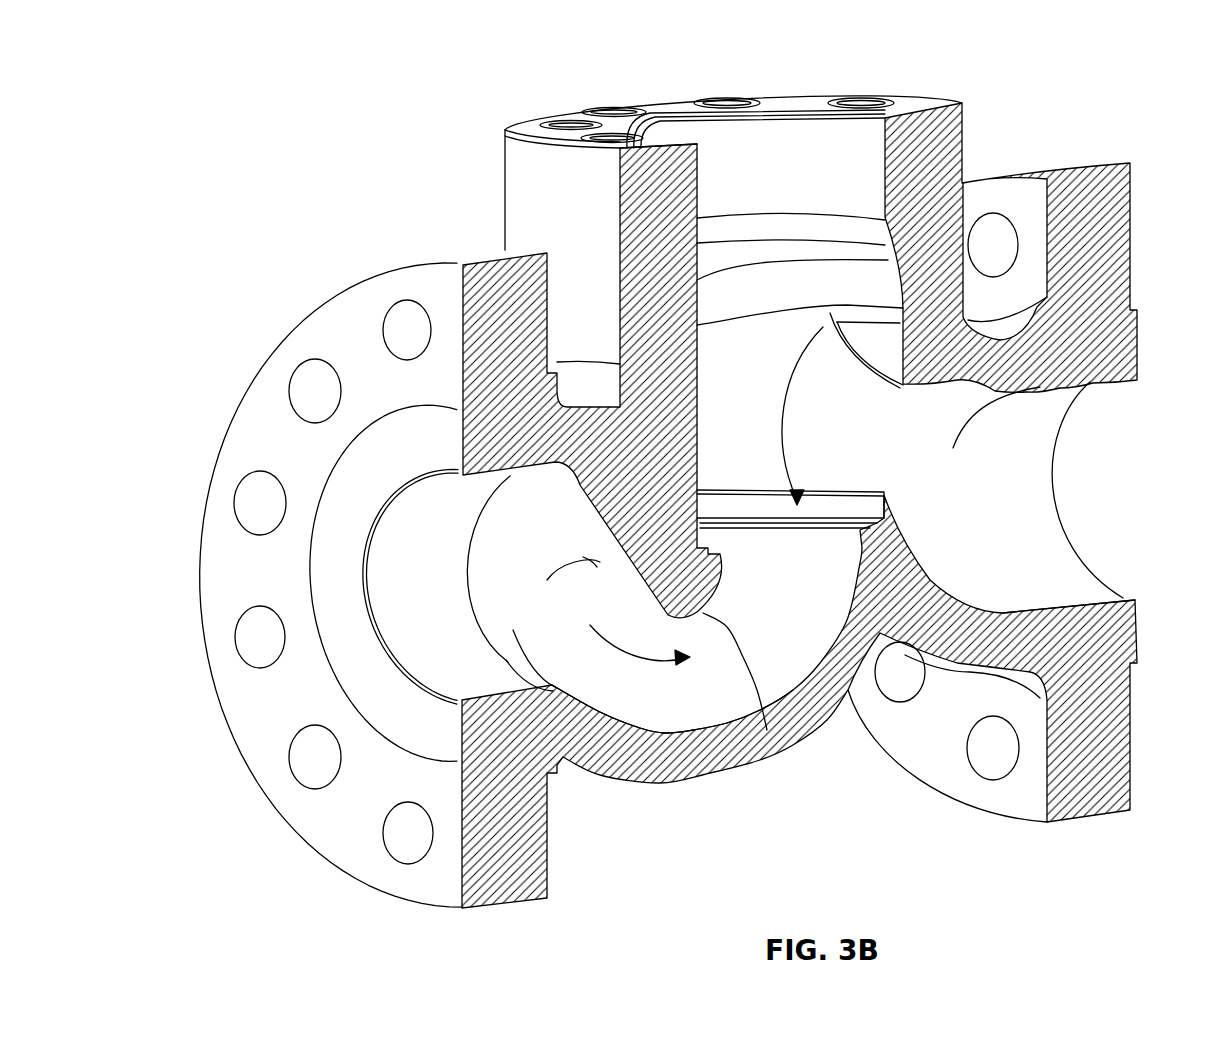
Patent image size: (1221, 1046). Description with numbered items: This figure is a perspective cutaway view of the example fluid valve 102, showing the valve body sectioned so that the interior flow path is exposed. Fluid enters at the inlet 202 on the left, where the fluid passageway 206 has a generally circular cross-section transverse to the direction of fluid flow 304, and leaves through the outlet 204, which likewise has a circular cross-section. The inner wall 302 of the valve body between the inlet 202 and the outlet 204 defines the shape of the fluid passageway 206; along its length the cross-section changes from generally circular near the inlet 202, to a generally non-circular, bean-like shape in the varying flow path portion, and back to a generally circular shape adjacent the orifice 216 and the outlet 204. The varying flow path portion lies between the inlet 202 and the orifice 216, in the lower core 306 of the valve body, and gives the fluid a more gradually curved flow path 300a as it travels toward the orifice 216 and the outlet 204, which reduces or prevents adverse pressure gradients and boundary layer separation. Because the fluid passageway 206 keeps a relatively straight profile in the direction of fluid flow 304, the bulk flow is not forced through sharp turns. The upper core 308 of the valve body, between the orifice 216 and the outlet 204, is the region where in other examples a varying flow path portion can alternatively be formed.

The fluid valve 102 is at (583, 80).
The inlet 202 is at (384, 650).
The outlet 204 is at (637, 208).
The fluid passageway 206 is at (935, 393).
The orifice 216 is at (805, 484).
The gradually curved flow path 300a is at (708, 704).
The inner wall 302 is at (513, 562).
The direction of fluid flow 304 is at (650, 660).
The lower core 306 is at (767, 730).
The upper core 308 is at (1047, 572).